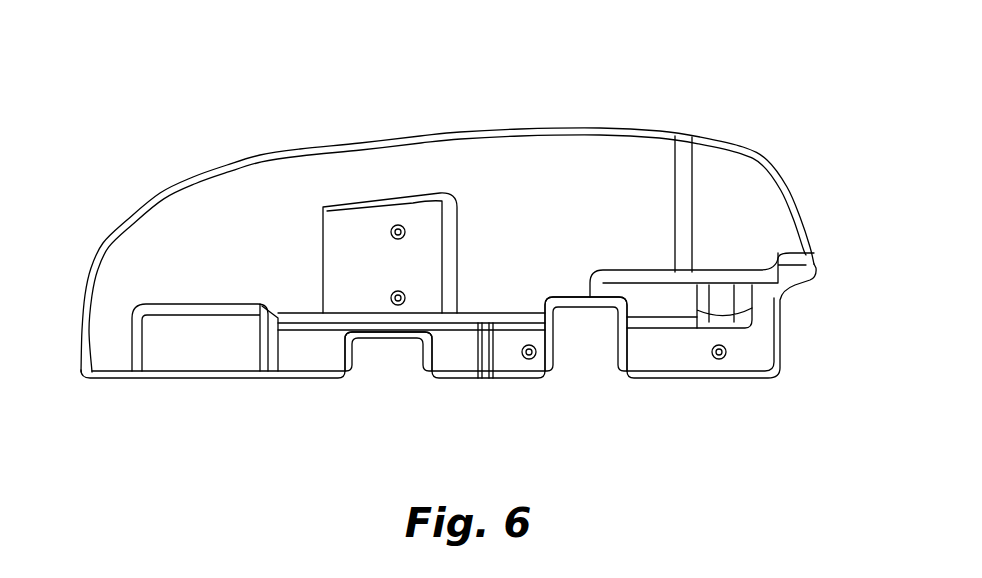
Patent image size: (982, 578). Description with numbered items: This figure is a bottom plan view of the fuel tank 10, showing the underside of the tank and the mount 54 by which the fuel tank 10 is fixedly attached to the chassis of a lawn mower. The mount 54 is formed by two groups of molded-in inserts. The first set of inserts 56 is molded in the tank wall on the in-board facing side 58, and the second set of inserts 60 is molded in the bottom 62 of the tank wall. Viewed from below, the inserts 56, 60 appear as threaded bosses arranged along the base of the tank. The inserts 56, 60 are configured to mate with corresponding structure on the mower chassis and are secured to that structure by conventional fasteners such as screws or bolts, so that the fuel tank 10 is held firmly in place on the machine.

The fuel tank 10 is at (758, 74).
The mount 54 is at (396, 372).
The first set of inserts 56 is at (366, 363).
The in-board facing side 58 is at (489, 378).
The second set of inserts 60 is at (338, 243).
The bottom 62 is at (177, 212).